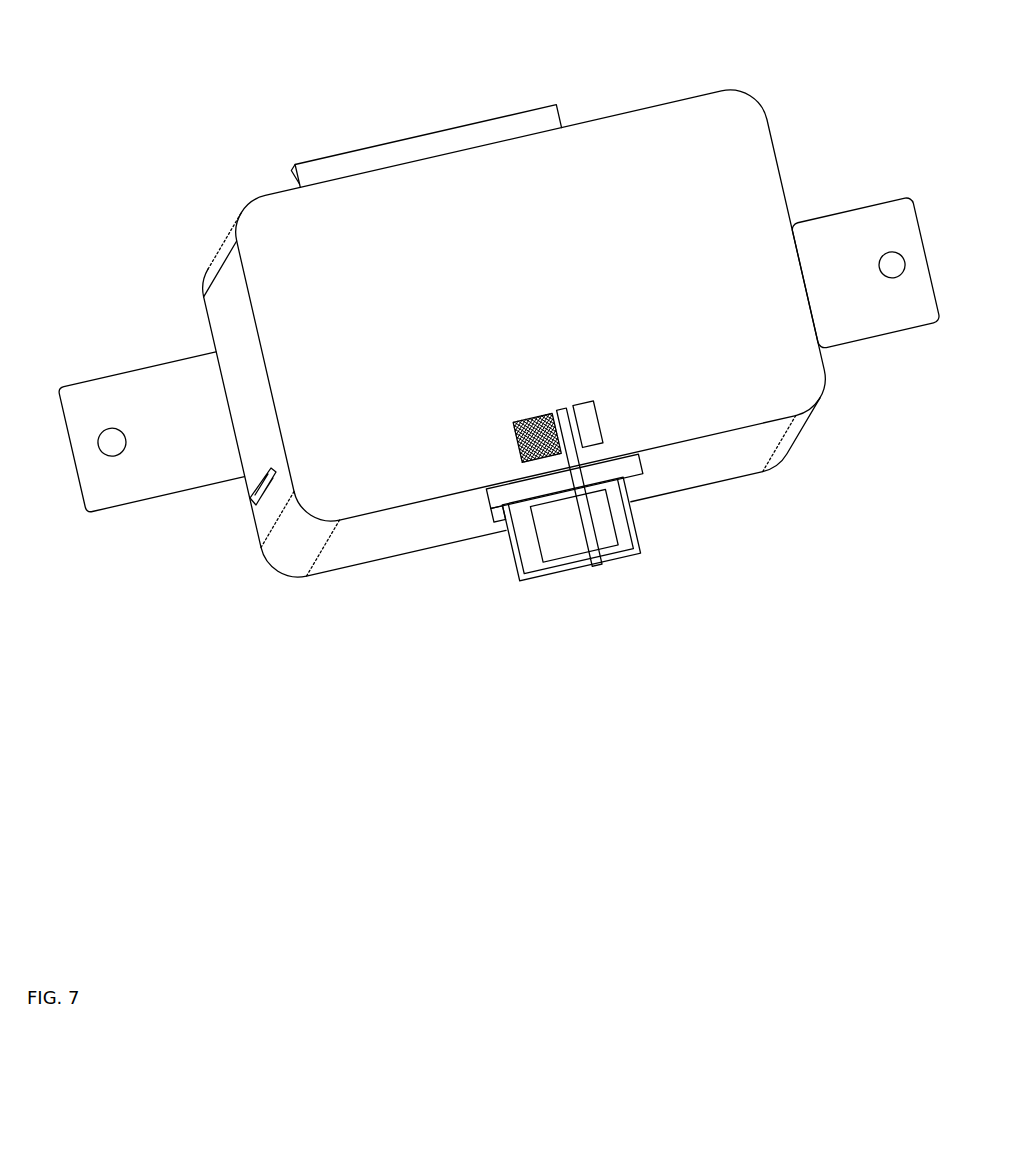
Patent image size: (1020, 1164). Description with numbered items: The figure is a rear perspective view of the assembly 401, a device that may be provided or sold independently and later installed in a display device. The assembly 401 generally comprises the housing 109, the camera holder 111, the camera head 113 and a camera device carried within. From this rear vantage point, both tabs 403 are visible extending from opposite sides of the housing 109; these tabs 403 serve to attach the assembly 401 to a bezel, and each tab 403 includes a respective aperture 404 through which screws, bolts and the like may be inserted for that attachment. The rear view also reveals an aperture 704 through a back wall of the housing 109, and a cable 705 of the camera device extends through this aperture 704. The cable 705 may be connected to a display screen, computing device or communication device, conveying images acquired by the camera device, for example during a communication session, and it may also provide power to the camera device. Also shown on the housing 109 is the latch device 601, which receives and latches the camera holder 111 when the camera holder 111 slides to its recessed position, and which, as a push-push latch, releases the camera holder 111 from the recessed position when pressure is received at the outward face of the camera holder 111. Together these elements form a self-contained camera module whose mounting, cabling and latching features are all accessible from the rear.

The housing 109 is at (516, 173).
The camera holder 111 is at (272, 577).
The camera head 113 is at (351, 162).
The assembly 401 is at (212, 746).
The tabs 403 is at (82, 387).
The aperture 404 is at (120, 452).
The latch device 601 is at (636, 531).
The aperture 704 is at (585, 410).
The cable 705 is at (550, 420).